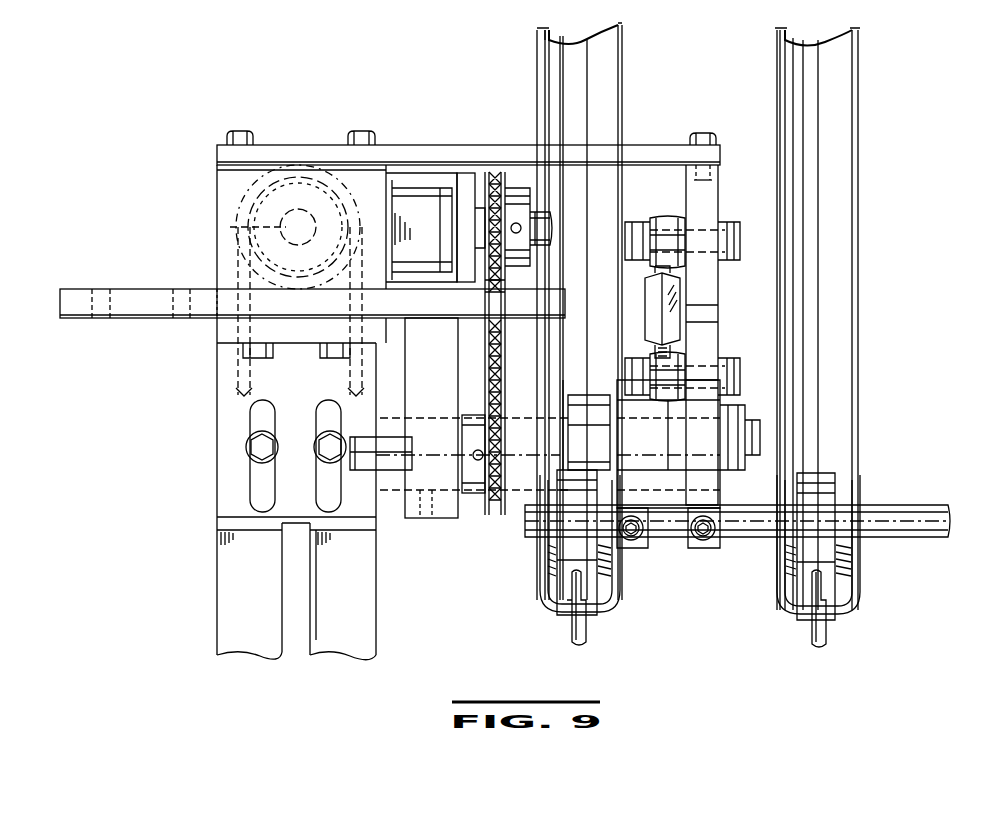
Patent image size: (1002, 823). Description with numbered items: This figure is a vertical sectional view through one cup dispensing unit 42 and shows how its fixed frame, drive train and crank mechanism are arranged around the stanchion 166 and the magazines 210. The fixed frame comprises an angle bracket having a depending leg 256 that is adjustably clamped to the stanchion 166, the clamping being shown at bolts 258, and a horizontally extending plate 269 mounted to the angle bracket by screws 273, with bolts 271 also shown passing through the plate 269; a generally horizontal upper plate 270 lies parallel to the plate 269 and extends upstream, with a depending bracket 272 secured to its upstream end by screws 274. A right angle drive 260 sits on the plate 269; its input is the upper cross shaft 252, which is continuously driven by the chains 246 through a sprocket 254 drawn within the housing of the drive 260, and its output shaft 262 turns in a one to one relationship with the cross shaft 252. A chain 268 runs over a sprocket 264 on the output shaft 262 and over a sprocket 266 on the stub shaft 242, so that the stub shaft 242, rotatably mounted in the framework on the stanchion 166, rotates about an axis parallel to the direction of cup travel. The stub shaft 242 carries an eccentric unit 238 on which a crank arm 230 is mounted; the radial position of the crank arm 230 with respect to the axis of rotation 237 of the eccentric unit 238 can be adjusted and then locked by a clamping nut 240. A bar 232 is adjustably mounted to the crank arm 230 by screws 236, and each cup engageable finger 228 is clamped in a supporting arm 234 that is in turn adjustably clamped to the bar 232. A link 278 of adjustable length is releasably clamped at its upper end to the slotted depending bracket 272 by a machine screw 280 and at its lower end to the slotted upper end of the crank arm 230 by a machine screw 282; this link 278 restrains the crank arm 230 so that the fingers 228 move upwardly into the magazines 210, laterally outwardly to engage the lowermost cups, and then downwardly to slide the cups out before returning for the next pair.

The cup dispensing unit 42 is at (922, 298).
The stanchion 166 is at (217, 568).
The magazines 210 is at (777, 85).
The cup engageable finger 228 is at (586, 628).
The crank arm 230 is at (720, 490).
The bar or shaft 232 is at (866, 507).
The supporting arm 234 is at (600, 600).
The screws 236 is at (700, 540).
The axis of rotation 237 is at (565, 462).
The eccentric unit 238 is at (586, 395).
The clamping nut 240 is at (728, 412).
The stub shaft 242 is at (388, 472).
The continuously driven chains 246 is at (236, 372).
The second cross shaft 252 is at (230, 227).
The sprocket 254 is at (245, 262).
The depending leg 256 is at (262, 417).
The bolts 258 is at (318, 452).
The right angle drive 260 is at (218, 192).
The output shaft 262 is at (550, 224).
The sprocket 264 is at (522, 188).
The sprocket 266 is at (470, 495).
The chain 268 is at (505, 283).
The horizontally extending plate 269 is at (208, 292).
The upper plate 270 is at (386, 150).
The bolts 271 is at (192, 320).
The depending bracket 272 is at (718, 200).
The screws 273 is at (338, 358).
The screws 274 is at (712, 133).
The link 278 is at (648, 322).
The machine screw 280 is at (730, 260).
The machine screw 282 is at (725, 368).